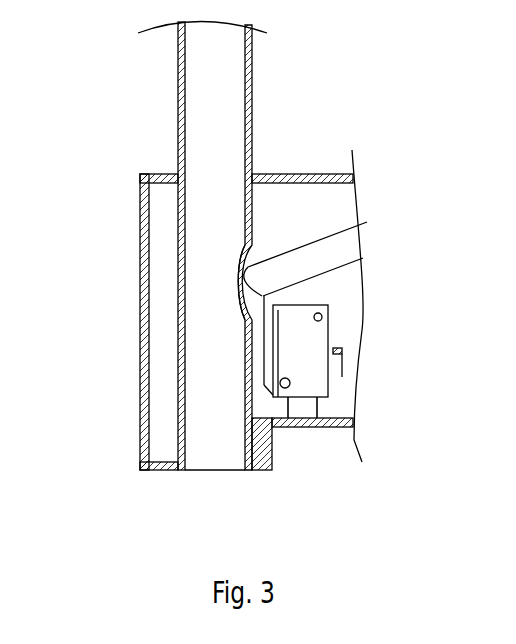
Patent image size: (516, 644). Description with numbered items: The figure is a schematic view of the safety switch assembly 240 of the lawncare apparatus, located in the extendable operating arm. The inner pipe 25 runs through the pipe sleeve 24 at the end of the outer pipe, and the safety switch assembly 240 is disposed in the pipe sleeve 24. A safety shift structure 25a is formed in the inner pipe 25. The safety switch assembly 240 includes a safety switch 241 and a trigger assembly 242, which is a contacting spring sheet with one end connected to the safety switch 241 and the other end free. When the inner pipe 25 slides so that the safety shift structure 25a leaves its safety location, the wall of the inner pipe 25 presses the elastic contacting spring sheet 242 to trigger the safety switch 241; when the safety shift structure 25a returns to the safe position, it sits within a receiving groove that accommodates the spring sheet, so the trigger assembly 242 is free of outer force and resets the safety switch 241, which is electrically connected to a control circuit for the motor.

The pipe sleeve 24 is at (199, 310).
The inner pipe 25 is at (173, 246).
The safety shift structure 25a is at (326, 247).
The safety switch assembly 240 is at (355, 318).
The safety switch 241 is at (412, 398).
The trigger assembly 242 is at (463, 258).